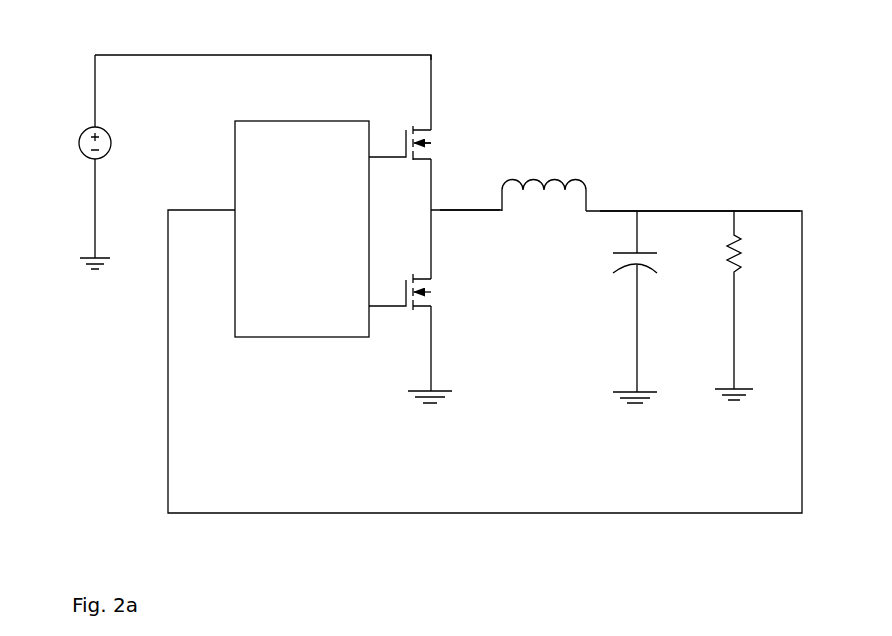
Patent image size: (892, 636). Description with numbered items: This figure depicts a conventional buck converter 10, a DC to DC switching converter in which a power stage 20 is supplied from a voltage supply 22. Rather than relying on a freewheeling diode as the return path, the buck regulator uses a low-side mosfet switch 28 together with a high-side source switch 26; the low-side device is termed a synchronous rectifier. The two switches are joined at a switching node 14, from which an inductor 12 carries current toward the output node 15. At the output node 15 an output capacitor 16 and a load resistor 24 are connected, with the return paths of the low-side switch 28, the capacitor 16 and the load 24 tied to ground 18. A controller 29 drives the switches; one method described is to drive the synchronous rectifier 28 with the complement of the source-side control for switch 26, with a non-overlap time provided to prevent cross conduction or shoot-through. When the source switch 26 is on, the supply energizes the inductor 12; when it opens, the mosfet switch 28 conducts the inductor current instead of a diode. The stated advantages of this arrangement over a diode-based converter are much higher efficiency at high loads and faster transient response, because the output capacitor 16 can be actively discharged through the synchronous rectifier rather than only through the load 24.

The buck converter 10 is at (638, 53).
The power stage 20 is at (453, 62).
The voltage supply 22 is at (72, 130).
The controller 29 is at (302, 229).
The source switch 26 is at (412, 121).
The mosfet switch 28 is at (412, 324).
The switching node 14 is at (478, 213).
The inductor 12 is at (580, 180).
The output node 15 is at (648, 209).
The output capacitor 16 is at (611, 287).
The load resistor 24 is at (719, 271).
The ground 18 is at (422, 406).